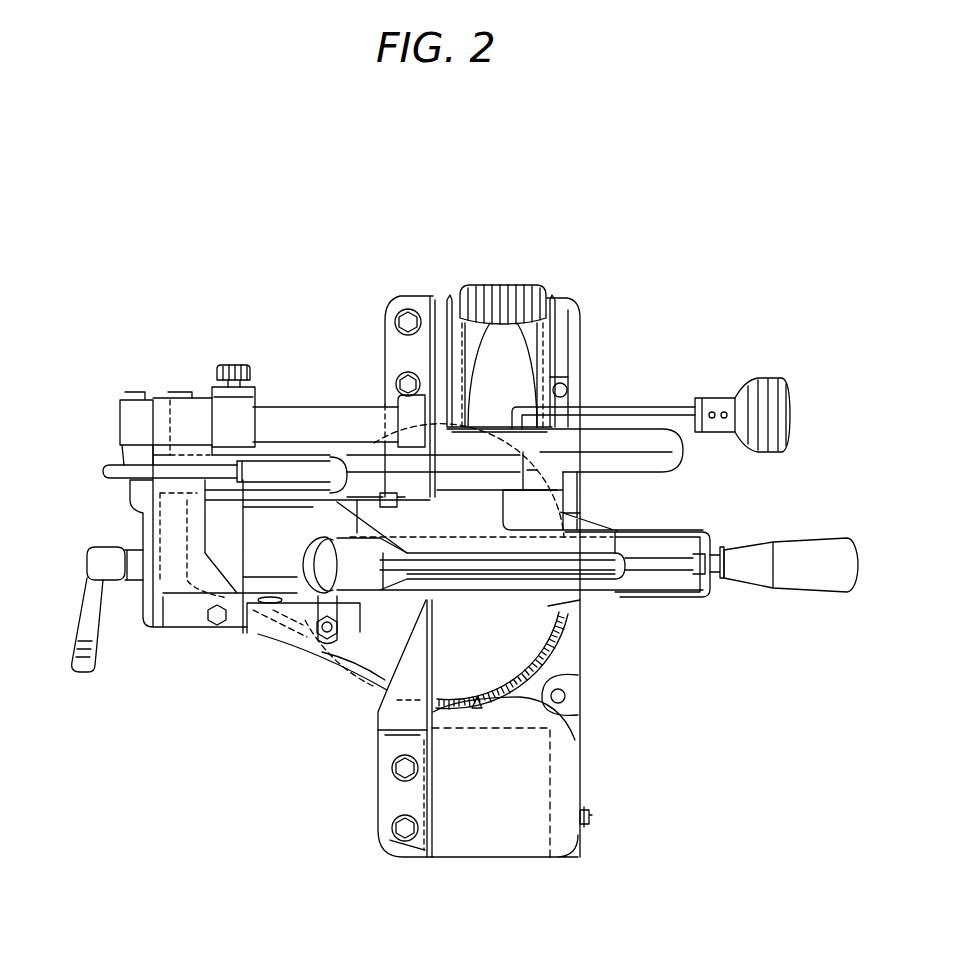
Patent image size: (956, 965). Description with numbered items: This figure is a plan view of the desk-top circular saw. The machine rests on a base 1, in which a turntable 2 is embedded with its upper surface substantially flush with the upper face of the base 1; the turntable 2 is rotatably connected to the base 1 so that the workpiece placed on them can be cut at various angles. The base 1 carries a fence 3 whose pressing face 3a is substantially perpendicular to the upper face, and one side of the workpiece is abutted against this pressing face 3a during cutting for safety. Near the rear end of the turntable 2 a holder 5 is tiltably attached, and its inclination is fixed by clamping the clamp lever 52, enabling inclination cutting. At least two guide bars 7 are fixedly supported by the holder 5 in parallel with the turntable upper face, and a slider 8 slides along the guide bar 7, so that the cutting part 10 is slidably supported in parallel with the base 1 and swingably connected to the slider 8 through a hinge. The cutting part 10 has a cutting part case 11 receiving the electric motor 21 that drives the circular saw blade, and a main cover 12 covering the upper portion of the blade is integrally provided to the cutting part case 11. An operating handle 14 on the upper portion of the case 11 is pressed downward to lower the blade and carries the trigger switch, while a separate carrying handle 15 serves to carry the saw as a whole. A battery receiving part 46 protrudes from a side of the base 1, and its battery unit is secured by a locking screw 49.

The base 1 is at (580, 657).
The turntable 2 is at (520, 647).
The fence 3 is at (413, 715).
The pressing face 3a is at (440, 813).
The holder 5 is at (128, 489).
The guide bar 7 is at (272, 413).
The slider 8 is at (218, 407).
The cutting part 10 is at (420, 578).
The cutting part case 11 is at (562, 346).
The main cover 12 is at (573, 577).
The operating handle 14 is at (625, 437).
The carrying handle 15 is at (373, 458).
The electric motor 21 is at (465, 358).
The battery receiving part 46 is at (550, 780).
The locking screw 49 is at (593, 817).
The clamp lever 52 is at (90, 601).